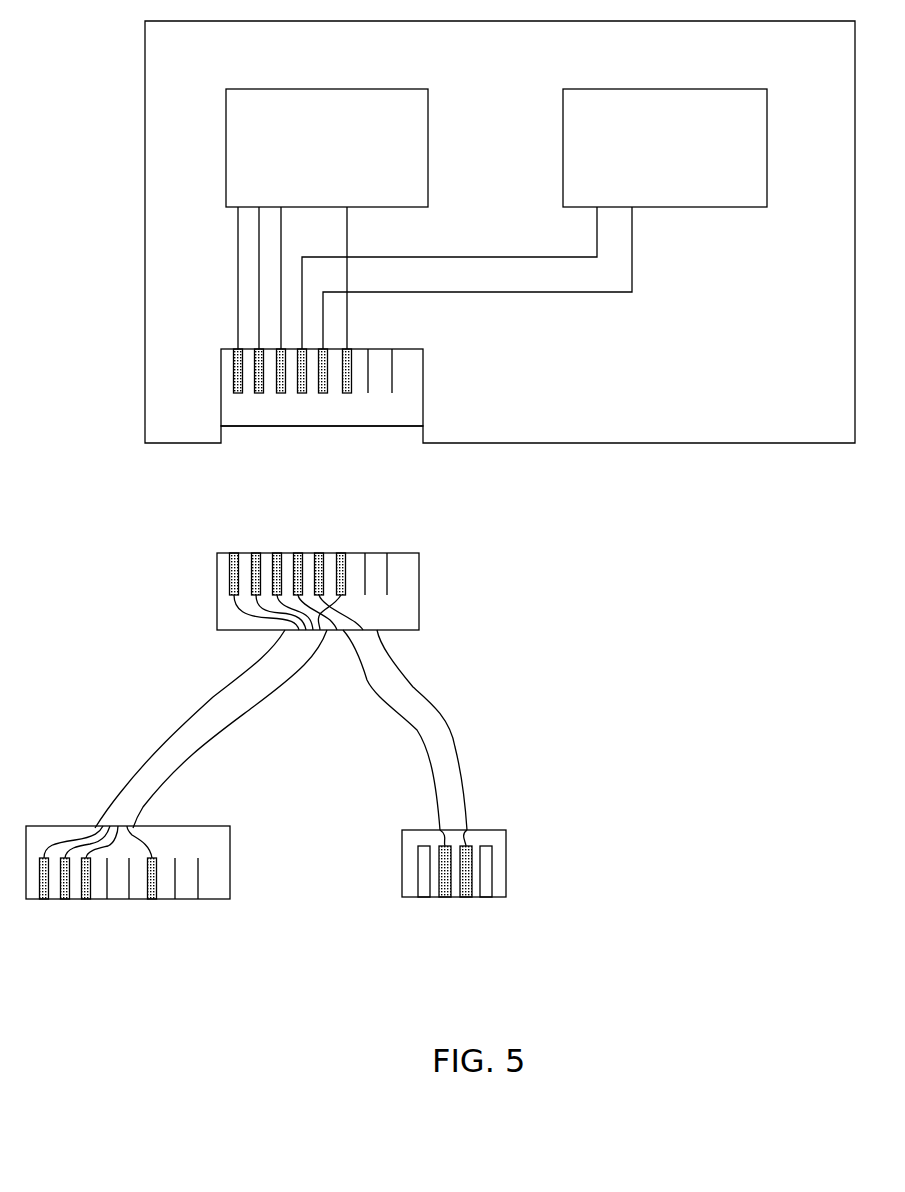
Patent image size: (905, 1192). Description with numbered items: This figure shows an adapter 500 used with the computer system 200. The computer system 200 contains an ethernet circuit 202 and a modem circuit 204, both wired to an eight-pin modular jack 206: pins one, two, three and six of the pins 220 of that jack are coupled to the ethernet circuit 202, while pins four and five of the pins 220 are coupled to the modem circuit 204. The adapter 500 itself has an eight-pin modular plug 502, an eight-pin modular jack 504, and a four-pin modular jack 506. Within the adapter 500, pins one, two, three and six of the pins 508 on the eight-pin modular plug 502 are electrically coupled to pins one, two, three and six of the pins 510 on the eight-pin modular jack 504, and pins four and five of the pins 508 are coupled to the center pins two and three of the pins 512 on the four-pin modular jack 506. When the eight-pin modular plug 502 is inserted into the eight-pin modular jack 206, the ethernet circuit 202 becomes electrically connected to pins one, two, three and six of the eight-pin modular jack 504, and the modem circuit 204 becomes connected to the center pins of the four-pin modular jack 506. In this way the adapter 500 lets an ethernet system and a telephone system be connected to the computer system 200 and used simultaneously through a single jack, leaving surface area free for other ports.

The computer system 200 is at (145, 187).
The ethernet circuit 202 is at (397, 190).
The modem circuit 204 is at (736, 190).
The 8-pin modular jack 206 is at (425, 382).
The pins 220 is at (313, 458).
The adapter 500 is at (101, 536).
The 8-pin modular plug 502 is at (217, 590).
The 8-pin modular jack 504 is at (232, 862).
The 4-pin modular jack 506 is at (507, 868).
The pins 508 is at (318, 510).
The pins 510 is at (127, 940).
The pins 512 is at (459, 937).